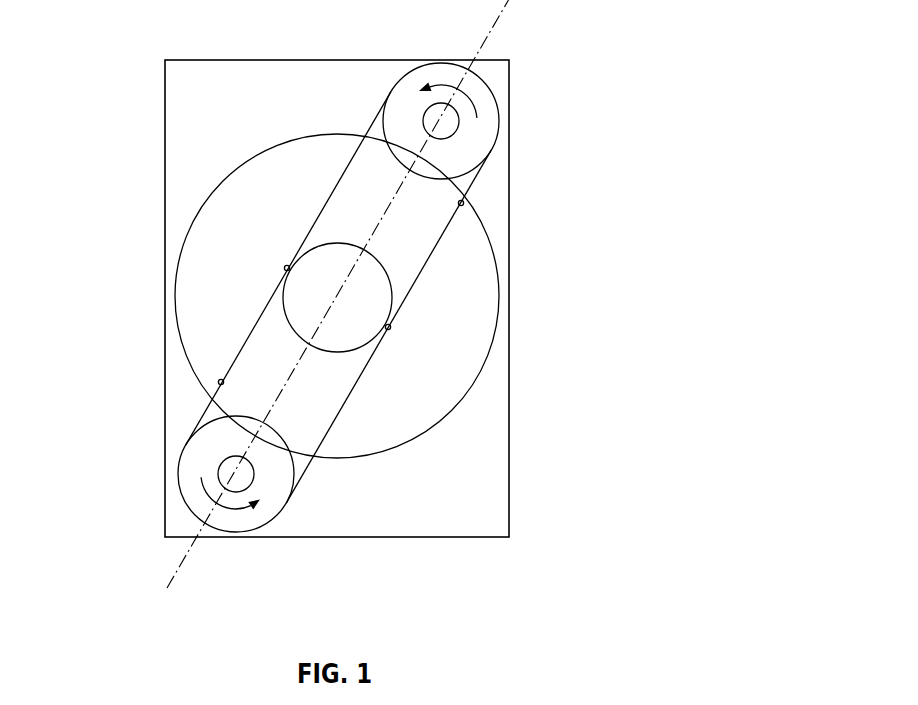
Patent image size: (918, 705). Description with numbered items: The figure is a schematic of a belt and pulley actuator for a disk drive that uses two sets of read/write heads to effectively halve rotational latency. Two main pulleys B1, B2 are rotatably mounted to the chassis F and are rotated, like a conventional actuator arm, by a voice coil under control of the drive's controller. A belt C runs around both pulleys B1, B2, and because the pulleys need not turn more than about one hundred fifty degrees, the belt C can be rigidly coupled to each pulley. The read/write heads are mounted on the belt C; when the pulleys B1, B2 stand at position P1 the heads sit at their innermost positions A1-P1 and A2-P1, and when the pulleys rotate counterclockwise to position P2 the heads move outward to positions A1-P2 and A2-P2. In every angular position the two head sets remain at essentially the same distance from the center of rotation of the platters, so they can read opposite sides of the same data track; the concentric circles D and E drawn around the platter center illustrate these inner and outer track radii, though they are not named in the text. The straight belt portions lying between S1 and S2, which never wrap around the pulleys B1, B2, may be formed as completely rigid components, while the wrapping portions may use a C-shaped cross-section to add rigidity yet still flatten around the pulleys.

The chassis F is at (497, 452).
The disk / drum D is at (465, 372).
The center hub circle E is at (332, 253).
The belt C is at (337, 420).
The main pulley B1 is at (442, 76).
The main pulley B2 is at (227, 522).
The pulley position P1 is at (499, 118).
The pulley position P2 is at (415, 65).
The belt portion boundary S1 is at (395, 158).
The belt portion boundary S2 is at (253, 322).
The read/write head innermost position A2-P1 is at (285, 267).
The read/write head outer position A1-P2 is at (463, 205).
The read/write head innermost position A1-P1 is at (390, 327).
The read/write head outer position A2-P2 is at (219, 383).